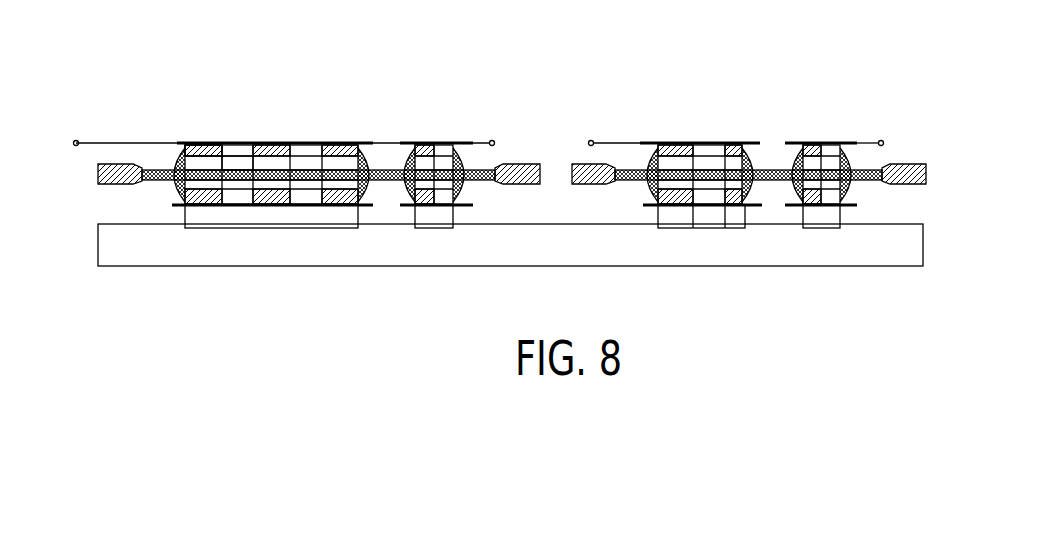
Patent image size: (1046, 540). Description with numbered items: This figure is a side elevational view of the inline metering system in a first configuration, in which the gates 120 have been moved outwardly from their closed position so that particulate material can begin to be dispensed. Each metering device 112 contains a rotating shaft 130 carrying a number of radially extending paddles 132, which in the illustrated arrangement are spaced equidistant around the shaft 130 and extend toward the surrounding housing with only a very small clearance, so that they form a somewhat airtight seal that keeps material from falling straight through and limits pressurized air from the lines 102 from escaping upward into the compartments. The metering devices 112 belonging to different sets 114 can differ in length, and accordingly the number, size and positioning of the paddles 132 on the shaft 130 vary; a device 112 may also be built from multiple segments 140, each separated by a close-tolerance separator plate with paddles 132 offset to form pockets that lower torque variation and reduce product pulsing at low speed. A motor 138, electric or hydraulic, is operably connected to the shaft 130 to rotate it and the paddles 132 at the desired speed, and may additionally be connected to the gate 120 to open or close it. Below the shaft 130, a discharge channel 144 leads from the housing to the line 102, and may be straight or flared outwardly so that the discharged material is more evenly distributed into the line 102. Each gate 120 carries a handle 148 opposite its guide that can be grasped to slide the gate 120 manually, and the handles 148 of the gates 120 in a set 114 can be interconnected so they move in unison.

The line 102 is at (125, 252).
The metering device 112 is at (304, 140).
The set 114 is at (354, 140).
The gate 120 is at (126, 142).
The shaft 130 is at (238, 158).
The paddle 132 is at (212, 145).
The motor 138 is at (110, 186).
The segment 140 is at (735, 212).
The discharge channel 144 is at (196, 213).
The handle 148 is at (76, 141).